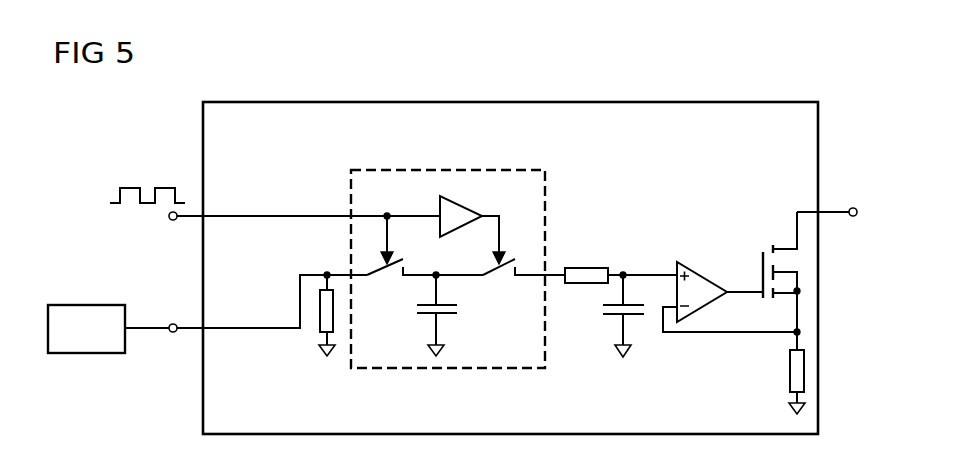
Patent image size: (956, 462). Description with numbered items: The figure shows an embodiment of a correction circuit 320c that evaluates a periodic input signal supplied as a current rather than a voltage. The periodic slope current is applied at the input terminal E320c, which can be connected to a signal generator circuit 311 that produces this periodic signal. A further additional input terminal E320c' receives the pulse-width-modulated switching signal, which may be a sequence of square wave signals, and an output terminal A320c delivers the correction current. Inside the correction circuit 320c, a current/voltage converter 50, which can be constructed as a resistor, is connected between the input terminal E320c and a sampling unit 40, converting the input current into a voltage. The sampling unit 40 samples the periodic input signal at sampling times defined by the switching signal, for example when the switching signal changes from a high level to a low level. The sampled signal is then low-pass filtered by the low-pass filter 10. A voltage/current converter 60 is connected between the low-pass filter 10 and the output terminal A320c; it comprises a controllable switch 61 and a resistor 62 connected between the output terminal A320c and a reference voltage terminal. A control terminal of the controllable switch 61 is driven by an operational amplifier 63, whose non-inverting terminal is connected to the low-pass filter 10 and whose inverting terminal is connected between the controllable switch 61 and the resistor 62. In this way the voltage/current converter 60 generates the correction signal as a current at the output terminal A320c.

The correction circuit 320c is at (498, 102).
The sampling unit 40 is at (442, 170).
The current/voltage converter 50 is at (334, 309).
The low-pass filter 10 is at (583, 253).
The voltage/current converter 60 is at (738, 220).
The controllable switch 61 is at (763, 259).
The resistor 62 is at (788, 370).
The operational amplifier 63 is at (690, 262).
The signal generator circuit 311 is at (86, 355).
The additional input terminal E320c' is at (275, 237).
The input terminal E320c is at (246, 333).
The output terminal A320c is at (853, 218).